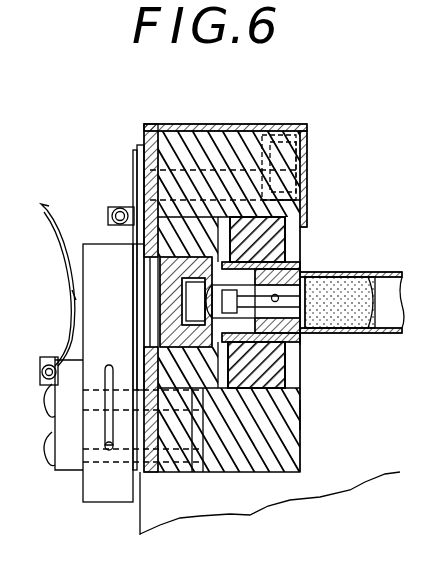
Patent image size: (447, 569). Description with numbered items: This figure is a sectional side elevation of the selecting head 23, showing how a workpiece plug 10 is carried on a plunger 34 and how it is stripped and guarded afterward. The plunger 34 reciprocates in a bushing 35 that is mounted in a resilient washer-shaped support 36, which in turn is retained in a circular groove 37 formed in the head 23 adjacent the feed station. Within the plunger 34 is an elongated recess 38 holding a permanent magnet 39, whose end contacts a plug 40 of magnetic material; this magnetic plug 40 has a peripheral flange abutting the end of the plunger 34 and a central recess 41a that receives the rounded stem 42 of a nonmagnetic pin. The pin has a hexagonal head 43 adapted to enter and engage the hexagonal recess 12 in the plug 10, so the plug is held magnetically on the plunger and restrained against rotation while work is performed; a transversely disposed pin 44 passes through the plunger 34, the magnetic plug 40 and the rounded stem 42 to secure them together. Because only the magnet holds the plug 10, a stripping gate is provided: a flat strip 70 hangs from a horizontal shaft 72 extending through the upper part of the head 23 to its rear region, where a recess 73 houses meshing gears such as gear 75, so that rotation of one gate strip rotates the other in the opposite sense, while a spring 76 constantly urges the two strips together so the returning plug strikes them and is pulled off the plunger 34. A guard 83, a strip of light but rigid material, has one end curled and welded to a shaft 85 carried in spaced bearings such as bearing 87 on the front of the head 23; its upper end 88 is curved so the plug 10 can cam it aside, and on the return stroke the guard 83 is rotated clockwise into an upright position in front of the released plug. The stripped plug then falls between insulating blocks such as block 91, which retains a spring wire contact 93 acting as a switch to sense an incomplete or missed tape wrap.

The head 23 is at (307, 124).
The gear 75 is at (307, 143).
The shaft 72 is at (302, 160).
The recess 73 is at (300, 190).
The head 43 is at (196, 258).
The central recess 41a is at (287, 254).
The pin 44 is at (300, 264).
The permanent magnet 39 is at (386, 272).
The elongated recess 38 is at (330, 283).
The plunger 34 is at (390, 336).
The plug of magnetic material 40 is at (318, 335).
The rounded stem 42 is at (300, 345).
The bushing 35 is at (300, 390).
The resilient washer-shaped support 36 is at (300, 418).
The circular groove 37 is at (260, 396).
The curved end 88 is at (44, 210).
The spring 76 is at (116, 208).
The plug 10 is at (140, 252).
The guard 83 is at (72, 294).
The recess 12 is at (137, 297).
The flat strip 70 is at (137, 320).
The shaft 85 is at (46, 363).
The spring wire contact 93 is at (105, 382).
The bearing 87 is at (73, 470).
The block of insulating material 91 is at (113, 486).